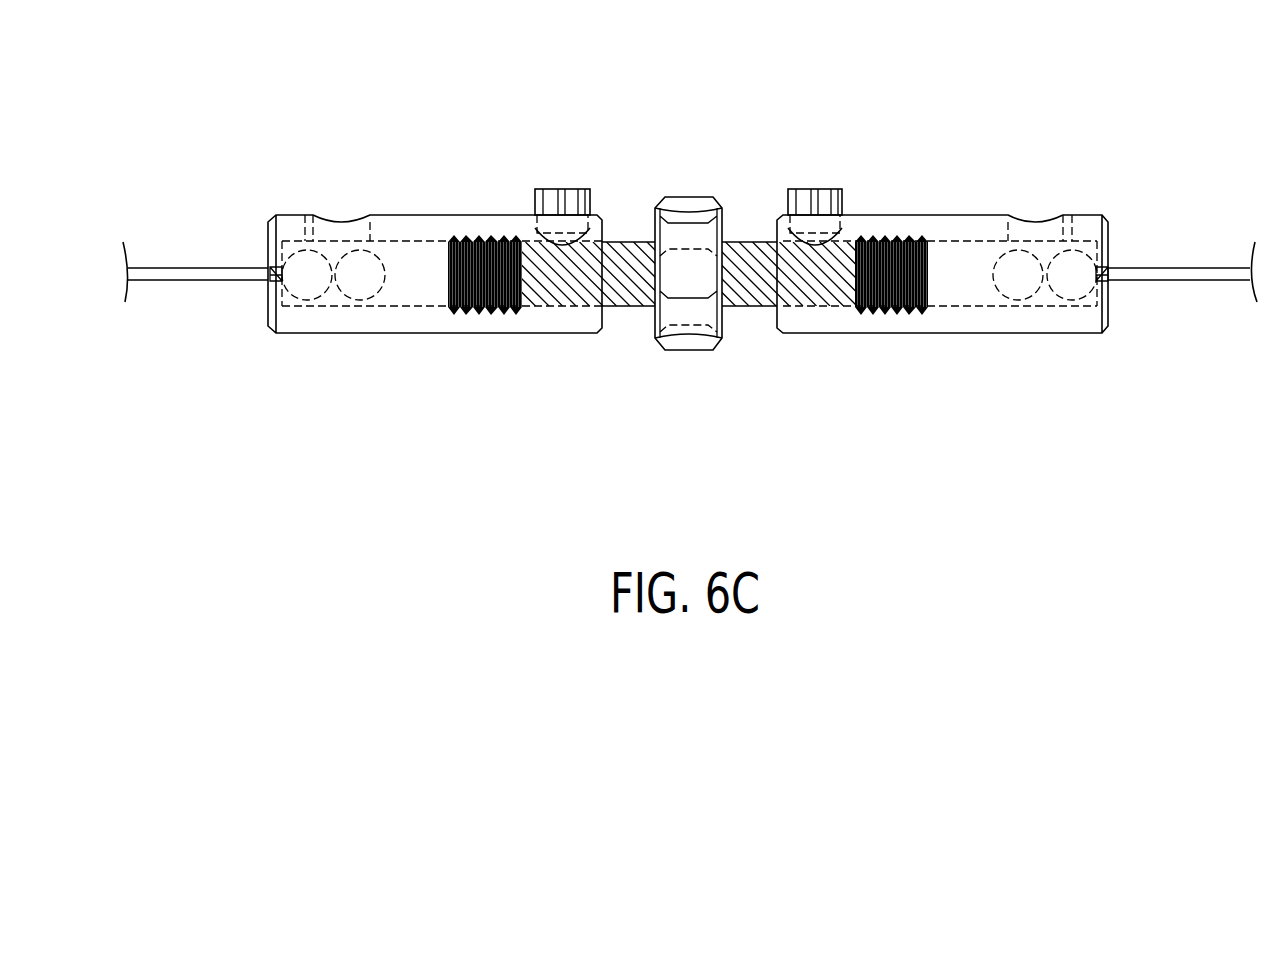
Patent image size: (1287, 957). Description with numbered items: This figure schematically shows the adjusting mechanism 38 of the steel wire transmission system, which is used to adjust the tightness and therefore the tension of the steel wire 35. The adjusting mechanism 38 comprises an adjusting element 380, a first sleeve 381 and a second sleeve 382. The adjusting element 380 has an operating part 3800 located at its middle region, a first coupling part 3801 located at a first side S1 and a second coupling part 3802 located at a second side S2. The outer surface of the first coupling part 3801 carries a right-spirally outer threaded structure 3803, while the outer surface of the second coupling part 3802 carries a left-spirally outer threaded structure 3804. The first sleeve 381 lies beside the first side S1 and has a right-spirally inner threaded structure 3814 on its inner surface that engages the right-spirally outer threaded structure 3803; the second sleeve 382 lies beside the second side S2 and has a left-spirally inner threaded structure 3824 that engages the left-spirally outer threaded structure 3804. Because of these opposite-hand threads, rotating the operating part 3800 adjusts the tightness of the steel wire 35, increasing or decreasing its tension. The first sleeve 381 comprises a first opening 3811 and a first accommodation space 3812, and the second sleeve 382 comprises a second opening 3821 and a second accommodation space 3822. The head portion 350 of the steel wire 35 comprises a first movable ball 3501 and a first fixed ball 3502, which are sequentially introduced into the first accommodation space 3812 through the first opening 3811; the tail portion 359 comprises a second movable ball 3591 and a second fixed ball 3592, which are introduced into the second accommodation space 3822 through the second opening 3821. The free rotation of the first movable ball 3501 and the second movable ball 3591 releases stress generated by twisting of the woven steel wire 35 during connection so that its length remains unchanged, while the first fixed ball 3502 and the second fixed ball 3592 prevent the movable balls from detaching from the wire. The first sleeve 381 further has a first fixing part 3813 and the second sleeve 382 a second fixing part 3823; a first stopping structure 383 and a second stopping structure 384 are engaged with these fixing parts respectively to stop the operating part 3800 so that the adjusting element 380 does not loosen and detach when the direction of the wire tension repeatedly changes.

The adjusting mechanism 38 is at (1188, 72).
The adjusting element 380 is at (684, 213).
The operating part 3800 is at (688, 213).
The first coupling part 3801 is at (630, 241).
The second coupling part 3802 is at (752, 241).
The right-spirally outer threaded structure 3803 is at (526, 303).
The left-spirally outer threaded structure 3804 is at (855, 302).
The first sleeve 381 is at (435, 253).
The first opening 3811 is at (341, 214).
The first accommodation space 3812 is at (418, 302).
The first fixing part 3813 is at (556, 230).
The right-spirally inner threaded structure 3814 is at (463, 240).
The second sleeve 382 is at (942, 255).
The second opening 3821 is at (1037, 217).
The second accommodation space 3822 is at (959, 299).
The second fixing part 3823 is at (820, 228).
The left-spirally inner threaded structure 3824 is at (907, 238).
The first stopping structure 383 is at (570, 205).
The second stopping structure 384 is at (822, 200).
The steel wire 35 is at (192, 278).
The head portion 350 is at (296, 342).
The first movable ball 3501 is at (306, 274).
The first fixed ball 3502 is at (359, 277).
The tail portion 359 is at (1079, 336).
The second movable ball 3591 is at (1072, 276).
The second fixed ball 3592 is at (1018, 277).
The first side S1 is at (626, 191).
The second side S2 is at (751, 191).